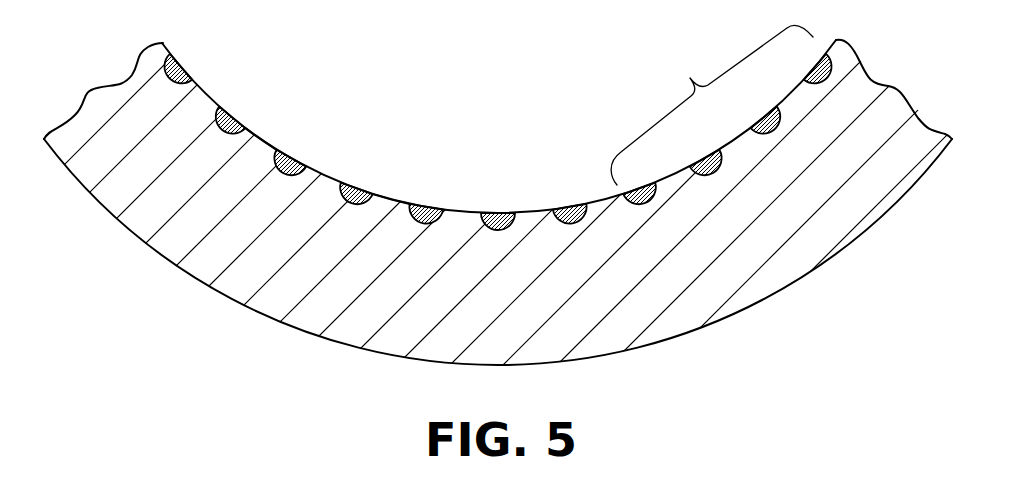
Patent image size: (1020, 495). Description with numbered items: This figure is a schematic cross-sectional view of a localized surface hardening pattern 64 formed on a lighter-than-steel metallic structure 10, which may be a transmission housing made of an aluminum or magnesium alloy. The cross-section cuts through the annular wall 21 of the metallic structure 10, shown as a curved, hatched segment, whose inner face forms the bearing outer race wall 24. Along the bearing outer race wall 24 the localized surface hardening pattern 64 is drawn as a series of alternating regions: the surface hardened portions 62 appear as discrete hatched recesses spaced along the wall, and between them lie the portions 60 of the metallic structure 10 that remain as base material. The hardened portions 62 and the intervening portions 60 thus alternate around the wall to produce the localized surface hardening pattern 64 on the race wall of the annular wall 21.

The metallic structure 10 is at (677, 318).
The annular wall 21 is at (352, 321).
The bearing outer race wall 24 is at (605, 198).
The portions of the metallic structure 60 is at (393, 198).
The surface hardened portions 62 is at (428, 205).
The localized surface hardening pattern 64 is at (712, 105).